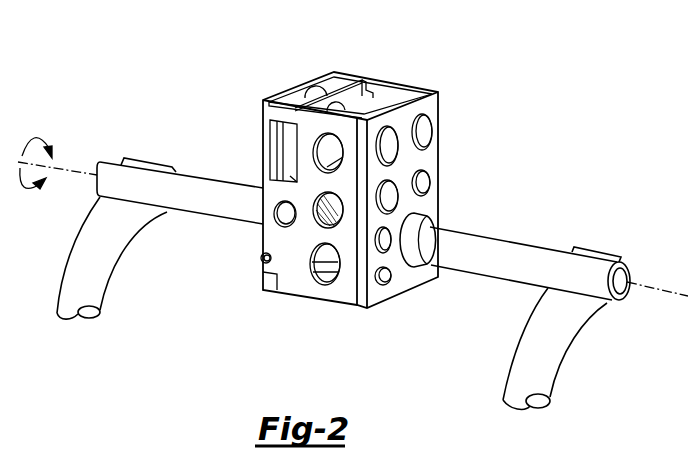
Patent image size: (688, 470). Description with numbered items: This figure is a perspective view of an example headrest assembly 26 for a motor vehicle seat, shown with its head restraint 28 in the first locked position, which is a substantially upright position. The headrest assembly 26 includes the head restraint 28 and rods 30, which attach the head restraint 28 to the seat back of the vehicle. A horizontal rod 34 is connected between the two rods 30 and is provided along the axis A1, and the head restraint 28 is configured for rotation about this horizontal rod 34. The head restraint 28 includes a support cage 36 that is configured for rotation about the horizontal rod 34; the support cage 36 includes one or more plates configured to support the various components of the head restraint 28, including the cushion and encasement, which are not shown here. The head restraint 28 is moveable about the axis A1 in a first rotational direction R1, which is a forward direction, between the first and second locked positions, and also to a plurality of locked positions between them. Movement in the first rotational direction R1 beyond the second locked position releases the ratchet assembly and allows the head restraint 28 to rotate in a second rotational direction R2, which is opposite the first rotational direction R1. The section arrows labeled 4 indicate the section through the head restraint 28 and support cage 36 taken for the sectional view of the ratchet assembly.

The headrest assembly 26 is at (394, 166).
The head restraint 28 is at (413, 58).
The rod 30 is at (100, 283).
The horizontal rod 34 is at (182, 200).
The support cage 36 is at (263, 177).
The section line 4- 4 is at (447, 150).
The axis A1 is at (70, 168).
The first rotational direction R1 is at (37, 135).
The second rotational direction R2 is at (27, 193).